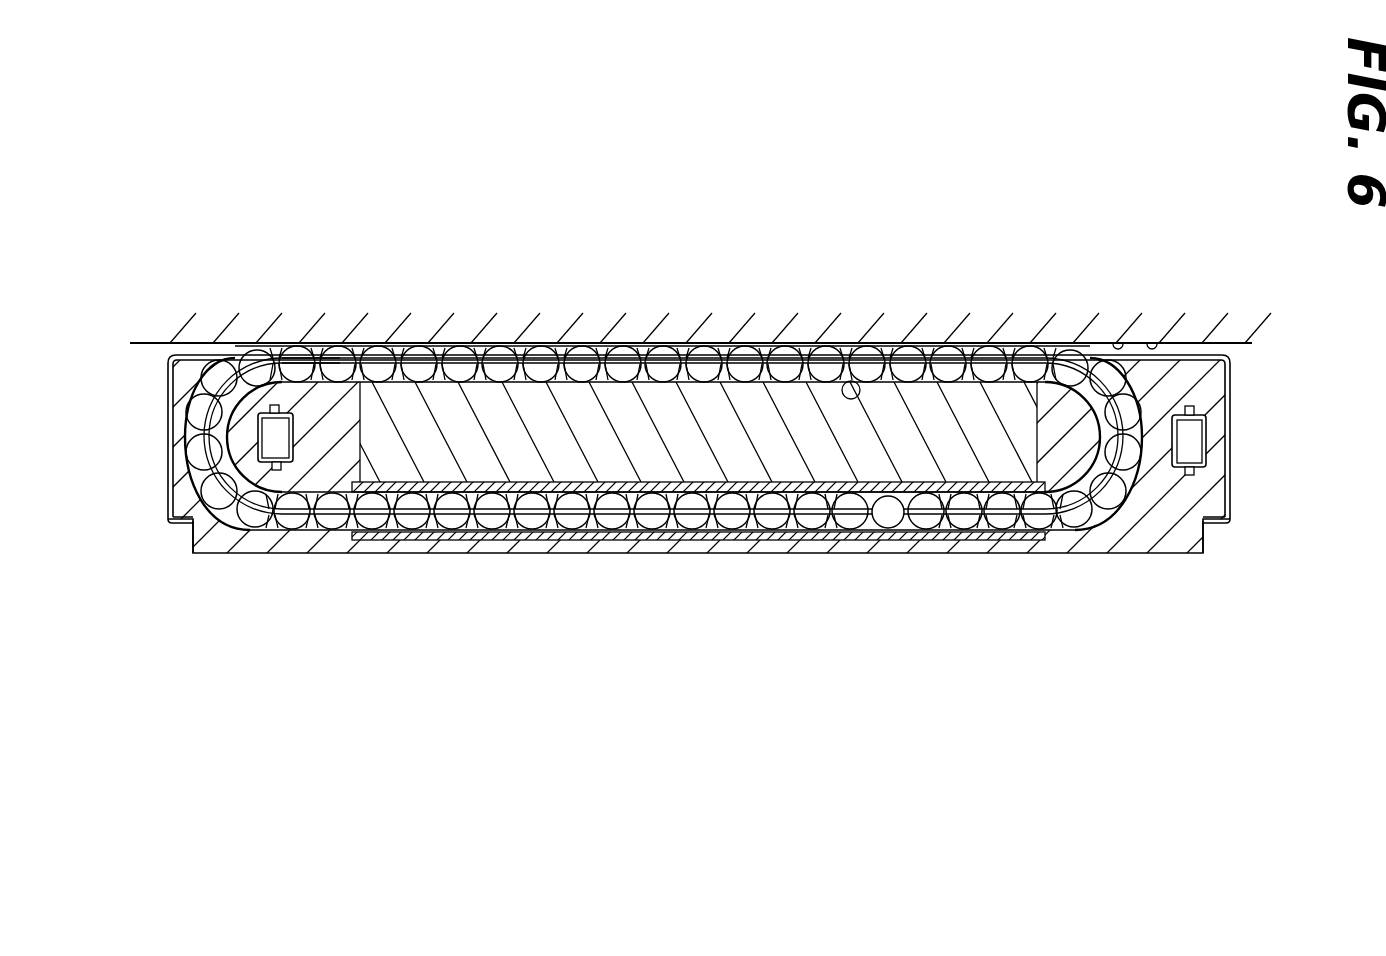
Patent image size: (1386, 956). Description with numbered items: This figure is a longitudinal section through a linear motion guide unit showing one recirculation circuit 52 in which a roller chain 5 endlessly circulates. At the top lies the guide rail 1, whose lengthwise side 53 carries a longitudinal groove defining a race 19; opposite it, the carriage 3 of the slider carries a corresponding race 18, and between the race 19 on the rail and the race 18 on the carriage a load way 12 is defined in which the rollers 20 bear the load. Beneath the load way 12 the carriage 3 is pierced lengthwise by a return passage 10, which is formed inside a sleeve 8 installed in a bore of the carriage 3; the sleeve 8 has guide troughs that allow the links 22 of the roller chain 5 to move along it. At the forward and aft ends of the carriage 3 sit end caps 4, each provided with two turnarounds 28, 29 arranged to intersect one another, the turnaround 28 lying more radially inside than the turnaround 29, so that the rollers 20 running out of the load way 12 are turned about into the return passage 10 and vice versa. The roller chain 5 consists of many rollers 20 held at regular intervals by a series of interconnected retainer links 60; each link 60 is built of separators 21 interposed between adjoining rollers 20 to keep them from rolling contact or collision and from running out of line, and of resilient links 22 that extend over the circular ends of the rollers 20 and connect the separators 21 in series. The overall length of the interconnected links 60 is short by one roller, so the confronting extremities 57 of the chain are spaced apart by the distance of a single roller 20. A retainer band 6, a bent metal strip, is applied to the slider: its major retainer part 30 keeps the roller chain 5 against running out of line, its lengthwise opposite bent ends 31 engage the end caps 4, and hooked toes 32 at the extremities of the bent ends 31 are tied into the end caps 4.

The guide rail 1 is at (768, 330).
The carriage 3 is at (598, 458).
The end cap 4 is at (297, 477).
The roller chain 5 is at (272, 452).
The retainer band 6 is at (236, 350).
The sleeve 8 is at (977, 492).
The return passage 10 is at (682, 512).
The load way 12 is at (640, 345).
The race 18 is at (722, 344).
The race 19 is at (852, 383).
The roller 20 is at (288, 420).
The separator 21 is at (1193, 437).
The resilient link 22 is at (500, 347).
The turnaround 28 is at (192, 519).
The turnaround 29 is at (193, 482).
The major retainer part 30 is at (353, 356).
The bent end 31 is at (168, 425).
The hooked toe 32 is at (188, 518).
The recirculation circuit 52 is at (323, 530).
The lengthwise side 53 is at (1163, 345).
The confronting extremity 57 is at (878, 527).
The retainer link 60 is at (512, 512).